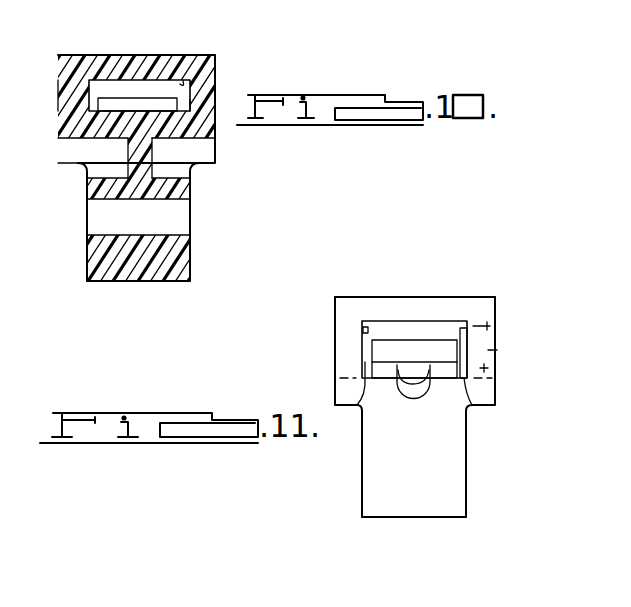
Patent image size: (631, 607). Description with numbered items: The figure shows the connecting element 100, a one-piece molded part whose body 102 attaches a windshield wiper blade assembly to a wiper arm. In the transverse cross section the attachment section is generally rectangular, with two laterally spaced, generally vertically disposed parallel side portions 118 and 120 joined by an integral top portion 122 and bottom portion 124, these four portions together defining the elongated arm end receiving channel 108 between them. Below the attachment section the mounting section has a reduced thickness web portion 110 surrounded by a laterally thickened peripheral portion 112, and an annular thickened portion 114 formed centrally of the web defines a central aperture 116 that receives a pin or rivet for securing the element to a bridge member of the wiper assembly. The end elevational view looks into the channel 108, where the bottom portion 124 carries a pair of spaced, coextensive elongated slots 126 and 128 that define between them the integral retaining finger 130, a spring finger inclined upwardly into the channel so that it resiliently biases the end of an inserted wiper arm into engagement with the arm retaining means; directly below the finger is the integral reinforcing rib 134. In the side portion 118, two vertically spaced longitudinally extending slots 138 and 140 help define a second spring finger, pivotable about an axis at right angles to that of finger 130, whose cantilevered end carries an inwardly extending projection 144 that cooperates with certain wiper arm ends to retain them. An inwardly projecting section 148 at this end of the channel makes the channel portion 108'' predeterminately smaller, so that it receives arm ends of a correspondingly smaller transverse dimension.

In FIG. 10, the connecting element 100 is at (182, 53).
In FIG. 11, the connecting element 100 is at (418, 296).
In FIG. 11, the body 102 is at (447, 418).
In FIG. 10, the channel 108 is at (226, 50).
In FIG. 11, the channel 108 is at (317, 309).
In FIG. 10, the channel portion 108'' is at (277, 82).
In FIG. 10, the web portion 110 is at (145, 156).
In FIG. 10, the peripheral portion 112 is at (177, 263).
In FIG. 10, the annular thickened portion 114 is at (97, 187).
In FIG. 10, the central aperture 116 is at (170, 230).
In FIG. 10, the side portion 118 is at (65, 105).
In FIG. 11, the side portion 118 is at (488, 352).
In FIG. 10, the side portion 120 is at (185, 100).
In FIG. 11, the side portion 120 is at (343, 357).
In FIG. 10, the top portion 122 is at (123, 55).
In FIG. 11, the top portion 122 is at (380, 297).
In FIG. 10, the bottom portion 124 is at (110, 140).
In FIG. 11, the slot 126 is at (357, 407).
In FIG. 11, the slot 128 is at (460, 323).
In FIG. 11, the retaining finger 130 is at (420, 347).
In FIG. 11, the reinforcing rib 134 is at (413, 392).
In FIG. 11, the slot 138 is at (497, 334).
In FIG. 11, the slot 140 is at (488, 368).
In FIG. 11, the projection 144 is at (468, 405).
In FIG. 10, the inwardly projecting section 148 is at (97, 90).